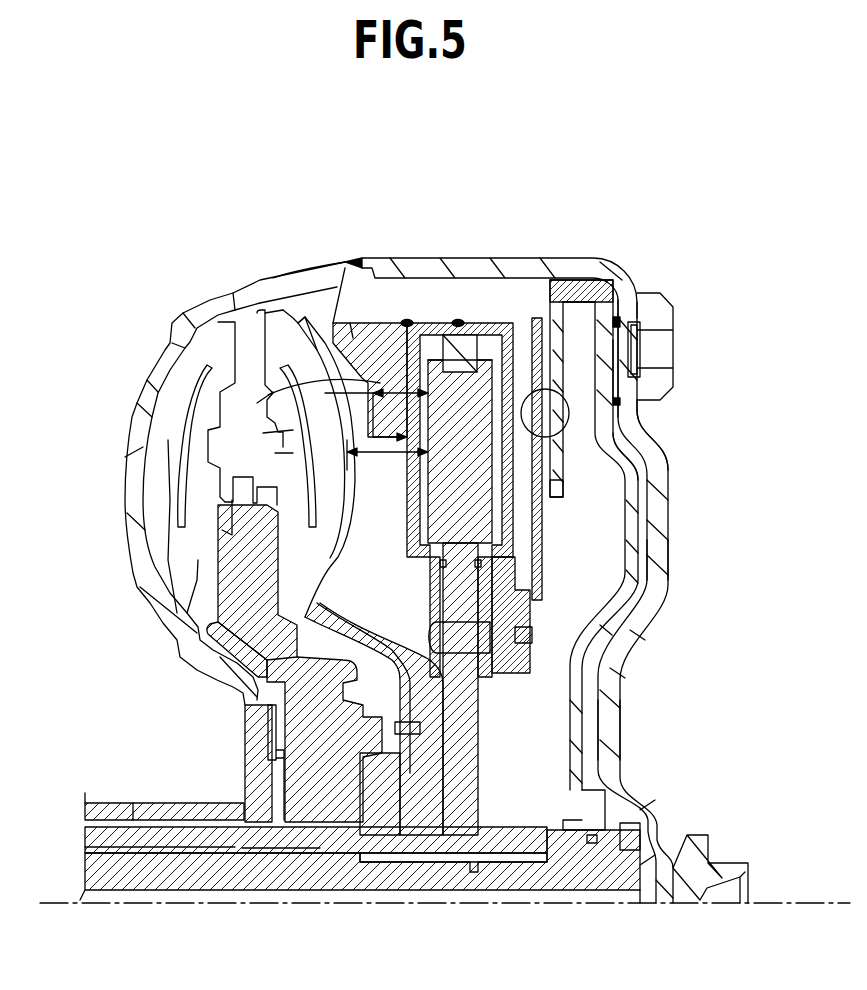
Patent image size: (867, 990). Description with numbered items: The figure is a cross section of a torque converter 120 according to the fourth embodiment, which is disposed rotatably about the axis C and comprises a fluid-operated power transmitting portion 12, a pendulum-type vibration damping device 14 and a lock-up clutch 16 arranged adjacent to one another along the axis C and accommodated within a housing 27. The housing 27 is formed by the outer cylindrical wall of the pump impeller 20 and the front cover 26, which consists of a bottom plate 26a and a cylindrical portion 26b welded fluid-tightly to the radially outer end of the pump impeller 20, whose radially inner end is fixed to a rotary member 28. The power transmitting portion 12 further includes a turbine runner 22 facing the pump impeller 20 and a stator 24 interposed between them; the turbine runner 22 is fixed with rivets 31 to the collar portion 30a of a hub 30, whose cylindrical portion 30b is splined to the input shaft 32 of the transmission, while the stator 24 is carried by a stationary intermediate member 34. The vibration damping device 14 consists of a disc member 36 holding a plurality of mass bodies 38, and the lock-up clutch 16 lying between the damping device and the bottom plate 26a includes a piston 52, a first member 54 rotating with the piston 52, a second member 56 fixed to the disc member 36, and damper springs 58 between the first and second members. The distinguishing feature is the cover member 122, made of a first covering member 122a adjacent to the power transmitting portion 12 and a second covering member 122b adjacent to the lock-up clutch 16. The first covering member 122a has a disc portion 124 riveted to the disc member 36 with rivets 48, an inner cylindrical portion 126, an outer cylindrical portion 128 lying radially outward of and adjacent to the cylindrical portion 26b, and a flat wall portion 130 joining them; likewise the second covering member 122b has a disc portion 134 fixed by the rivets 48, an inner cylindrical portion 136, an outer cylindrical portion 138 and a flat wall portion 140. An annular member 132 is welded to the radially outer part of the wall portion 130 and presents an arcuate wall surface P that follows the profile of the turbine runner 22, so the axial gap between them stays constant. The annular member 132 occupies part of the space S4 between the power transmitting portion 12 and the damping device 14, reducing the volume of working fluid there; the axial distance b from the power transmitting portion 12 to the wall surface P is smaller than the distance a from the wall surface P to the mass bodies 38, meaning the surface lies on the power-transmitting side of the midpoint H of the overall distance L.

The torque converter 120 is at (608, 168).
The housing 27 is at (332, 250).
The space S4 is at (385, 297).
The vibration damping device 14 is at (456, 318).
The cover member 122 is at (487, 308).
The cylindrical portion 26b is at (520, 272).
The lock-up clutch 16 is at (592, 277).
The fluid-operated power transmitting portion 12 is at (232, 262).
The turbine runner 22 is at (300, 306).
The annular member 132 is at (375, 345).
The outer cylindrical portion 128 is at (430, 335).
The outer cylindrical portion 138 is at (537, 280).
The pump impeller 20 is at (122, 405).
The first member 54 is at (555, 337).
The wall surface P is at (256, 408).
The distance b is at (270, 439).
The midpoint H is at (274, 461).
The distance a is at (376, 406).
The distance L is at (387, 461).
The damper springs 58 is at (565, 413).
The wall portion 130 is at (383, 480).
The first covering member 122a is at (385, 503).
The wall portion 140 is at (625, 447).
The piston 52 is at (632, 466).
The second covering member 122b is at (560, 512).
The mass bodies 38 is at (410, 527).
The second member 56 is at (650, 560).
The front cover 26 is at (682, 577).
The stator 24 is at (198, 578).
The inner cylindrical portion 126 is at (427, 565).
The inner cylindrical portion 136 is at (505, 558).
The disc portion 124 is at (437, 608).
The disc portion 134 is at (485, 610).
The rivets 48 is at (478, 637).
The rivets 31 is at (395, 728).
The bottom plate 26a is at (612, 703).
The disc member 36 is at (480, 732).
The rotary member 28 is at (163, 803).
The collar portion 30a is at (608, 803).
The intermediate member 34 is at (170, 838).
The input shaft 32 is at (316, 867).
The hub 30 is at (457, 868).
The cylindrical portion 30b is at (507, 845).
The axis C is at (556, 906).